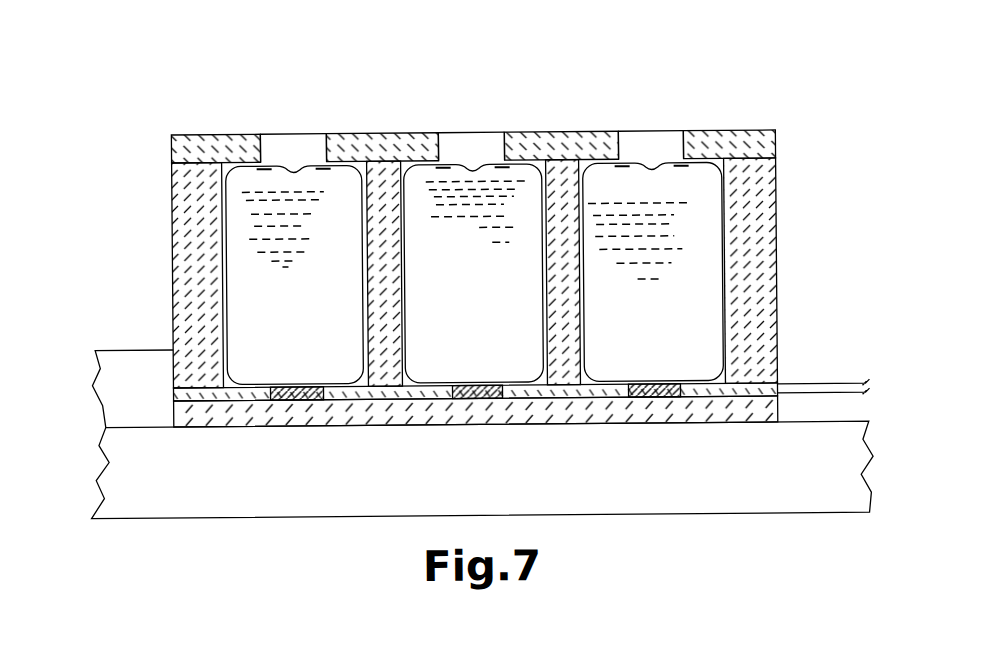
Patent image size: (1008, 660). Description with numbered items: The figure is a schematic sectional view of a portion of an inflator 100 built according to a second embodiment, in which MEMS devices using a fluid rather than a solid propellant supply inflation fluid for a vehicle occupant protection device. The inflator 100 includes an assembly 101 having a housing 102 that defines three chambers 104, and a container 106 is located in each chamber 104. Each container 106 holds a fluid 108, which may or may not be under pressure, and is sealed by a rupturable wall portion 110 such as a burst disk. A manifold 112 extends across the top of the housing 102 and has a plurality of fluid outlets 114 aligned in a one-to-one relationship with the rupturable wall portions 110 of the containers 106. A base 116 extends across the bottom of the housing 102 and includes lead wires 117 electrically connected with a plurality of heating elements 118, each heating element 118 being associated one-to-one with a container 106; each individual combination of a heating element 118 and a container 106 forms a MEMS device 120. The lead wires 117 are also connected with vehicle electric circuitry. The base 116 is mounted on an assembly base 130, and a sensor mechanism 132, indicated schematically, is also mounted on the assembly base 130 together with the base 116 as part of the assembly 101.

The inflator 100 is at (476, 302).
The assembly 101 is at (496, 260).
The housing 102 is at (471, 281).
The chamber 104 is at (422, 277).
The container 106 is at (240, 142).
The fluid 108 is at (273, 327).
The rupturable wall portion 110 is at (293, 176).
The manifold 112 is at (418, 132).
The fluid outlet 114 is at (283, 151).
The base 116 is at (376, 404).
The lead wires 117 is at (812, 389).
The heating element 118 is at (300, 403).
The MEMS device 120 is at (462, 141).
The assembly base 130 is at (165, 492).
The sensor mechanism 132 is at (112, 382).